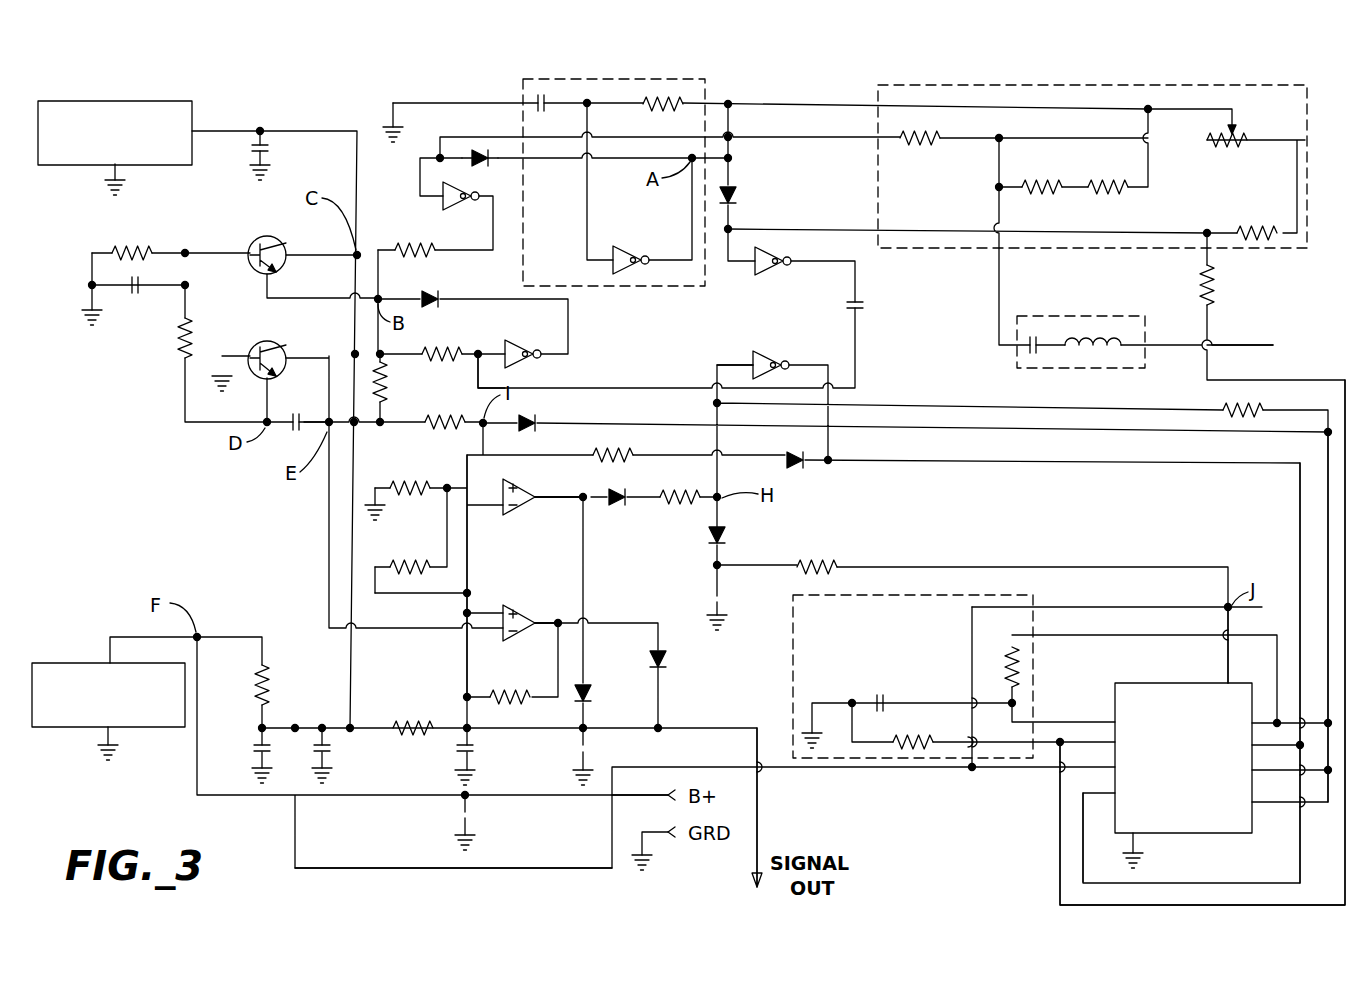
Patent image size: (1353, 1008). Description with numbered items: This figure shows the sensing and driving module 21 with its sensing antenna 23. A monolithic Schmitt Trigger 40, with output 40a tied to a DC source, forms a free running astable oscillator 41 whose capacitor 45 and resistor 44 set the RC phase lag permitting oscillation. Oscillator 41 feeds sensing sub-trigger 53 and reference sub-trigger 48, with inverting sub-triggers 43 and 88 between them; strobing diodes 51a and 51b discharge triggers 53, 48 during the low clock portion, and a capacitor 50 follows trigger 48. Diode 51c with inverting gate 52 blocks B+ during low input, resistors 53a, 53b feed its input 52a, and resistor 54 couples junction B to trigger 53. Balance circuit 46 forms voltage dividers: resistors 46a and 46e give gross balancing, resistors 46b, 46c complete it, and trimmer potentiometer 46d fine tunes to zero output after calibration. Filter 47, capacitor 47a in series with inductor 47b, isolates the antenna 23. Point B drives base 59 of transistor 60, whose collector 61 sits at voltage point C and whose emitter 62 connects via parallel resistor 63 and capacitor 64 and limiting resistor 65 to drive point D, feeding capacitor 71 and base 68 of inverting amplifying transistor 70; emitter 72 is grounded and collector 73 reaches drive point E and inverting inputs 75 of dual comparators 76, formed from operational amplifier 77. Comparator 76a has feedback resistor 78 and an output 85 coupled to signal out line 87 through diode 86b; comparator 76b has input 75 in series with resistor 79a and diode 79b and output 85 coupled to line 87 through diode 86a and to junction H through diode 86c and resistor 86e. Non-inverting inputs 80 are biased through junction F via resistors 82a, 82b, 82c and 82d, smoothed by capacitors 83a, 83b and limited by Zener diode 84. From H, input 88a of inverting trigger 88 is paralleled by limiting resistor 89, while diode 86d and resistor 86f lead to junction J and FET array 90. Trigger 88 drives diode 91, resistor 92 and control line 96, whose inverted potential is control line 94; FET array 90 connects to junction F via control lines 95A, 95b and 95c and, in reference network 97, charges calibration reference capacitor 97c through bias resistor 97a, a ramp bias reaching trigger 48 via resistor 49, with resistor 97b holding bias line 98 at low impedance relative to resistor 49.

The Schmitt Trigger 40 is at (100, 100).
The output 40a is at (213, 130).
The parallel resistor 63 is at (118, 245).
The capacitor 64 is at (130, 293).
The limiting resistor 65 is at (178, 340).
The transistor 60 is at (258, 238).
The collector 61 is at (277, 240).
The emitter 62 is at (255, 263).
The base 59 is at (282, 266).
The inverting and amplifying transistor 70 is at (258, 344).
The collector 73 is at (276, 346).
The base 68 is at (278, 373).
The emitter 72 is at (250, 372).
The capacitor 71 is at (294, 432).
The sensing sub-Schmitt trigger 53 is at (440, 198).
The resistor 54 is at (408, 243).
The strobing diode 51a is at (480, 150).
The strobing diode 51b is at (740, 195).
The diode 51c is at (432, 292).
The capacitor 45 is at (535, 100).
The free running astable oscillator 41 is at (560, 79).
The resistor 44 is at (660, 97).
The inverting sub-Schmitt trigger 43 is at (622, 248).
The reference sub-Schmitt trigger 48 is at (775, 252).
The capacitor 50 is at (848, 304).
The resistor 53b is at (440, 348).
The resistor 53a is at (388, 382).
The inverting gate 52 is at (516, 345).
The input 52a is at (490, 362).
The inverting trigger 88 is at (763, 356).
The input 88a is at (718, 363).
The balance circuit 46 is at (1020, 85).
The resistor 46a is at (938, 135).
The resistor 46b is at (1050, 183).
The potentiometer 46c is at (1240, 135).
The trimmer potentiometer 46d is at (1110, 194).
The resistor 46e is at (1250, 228).
The resistor 49 is at (1215, 281).
The sensing antenna 23 is at (1232, 345).
The filter 47 is at (1080, 368).
The capacitor 47a is at (1036, 340).
The inductor 47b is at (1100, 335).
The limiting resistor 89 is at (1250, 405).
The resistor 79a is at (442, 430).
The diode 79b is at (522, 420).
The resistor 92 is at (625, 452).
The diode 91 is at (792, 452).
The resistor 82d is at (412, 482).
The resistor 82c is at (412, 562).
The non-inverting inputs 80 is at (490, 482).
The operational amplifier 76b is at (538, 492).
The operational amplifier 76a is at (532, 622).
The dual signal comparators 76 is at (520, 610).
The output 85 is at (575, 505).
The inverting inputs 75 is at (468, 520).
The resistor 86e is at (682, 490).
The diode 86c is at (610, 506).
The diode 86d is at (740, 535).
The resistor 86f is at (820, 562).
The diode 86a is at (592, 690).
The diode 86b is at (668, 660).
The feedback resistor 78 is at (510, 706).
The smoothing capacitor 83b is at (472, 745).
The resistor 82a is at (270, 680).
The resistor 82b is at (400, 720).
The smoothing capacitor 83a is at (257, 745).
The Zener diode 84 is at (330, 750).
The operational amplifier 77 is at (62, 663).
The signal out line 87 is at (625, 800).
The control line 95A is at (350, 868).
The filter circuit 97 is at (790, 680).
The control line 95b is at (970, 625).
The calibration reference capacitor 97c is at (883, 700).
The bias resistor 97a is at (1022, 670).
The resistor 97b is at (896, 738).
The FET array 90 is at (1115, 683).
The control line 95c is at (1228, 668).
The control line 94 is at (1326, 515).
The control line 96 is at (1300, 548).
The bias line 98 is at (1058, 800).
The sensing and driving module 21 is at (103, 785).